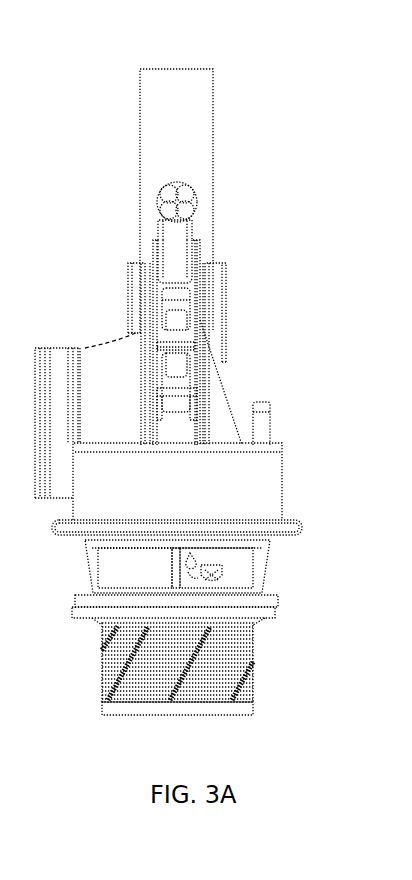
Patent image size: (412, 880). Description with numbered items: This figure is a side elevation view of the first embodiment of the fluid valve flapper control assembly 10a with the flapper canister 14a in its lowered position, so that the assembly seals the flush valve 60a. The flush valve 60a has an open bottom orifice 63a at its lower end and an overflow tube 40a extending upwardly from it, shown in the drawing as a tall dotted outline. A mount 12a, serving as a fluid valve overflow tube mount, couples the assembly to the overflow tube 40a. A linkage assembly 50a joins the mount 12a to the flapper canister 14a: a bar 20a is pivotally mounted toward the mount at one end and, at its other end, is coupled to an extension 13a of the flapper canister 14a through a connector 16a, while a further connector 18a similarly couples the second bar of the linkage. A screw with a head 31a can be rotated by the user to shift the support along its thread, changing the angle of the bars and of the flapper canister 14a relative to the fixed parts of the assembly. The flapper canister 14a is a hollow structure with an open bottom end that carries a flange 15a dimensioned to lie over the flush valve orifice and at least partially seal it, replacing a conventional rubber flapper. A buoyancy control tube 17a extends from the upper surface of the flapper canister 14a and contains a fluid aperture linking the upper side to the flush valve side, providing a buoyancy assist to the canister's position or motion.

The fluid valve flapper control assembly 10a is at (235, 96).
The mount 12a is at (190, 190).
The extension 13a is at (200, 378).
The flapper canister 14a is at (273, 447).
The flange 15a is at (285, 525).
The connector 16a is at (170, 334).
The buoyancy control tube 17a is at (270, 410).
The connector 18a is at (187, 398).
The bar 20a is at (193, 281).
The head 31a is at (195, 207).
The overflow tube 40a is at (145, 82).
The linkage assembly 50a is at (255, 233).
The flush valve 60a is at (270, 605).
The open bottom orifice 63a is at (250, 718).